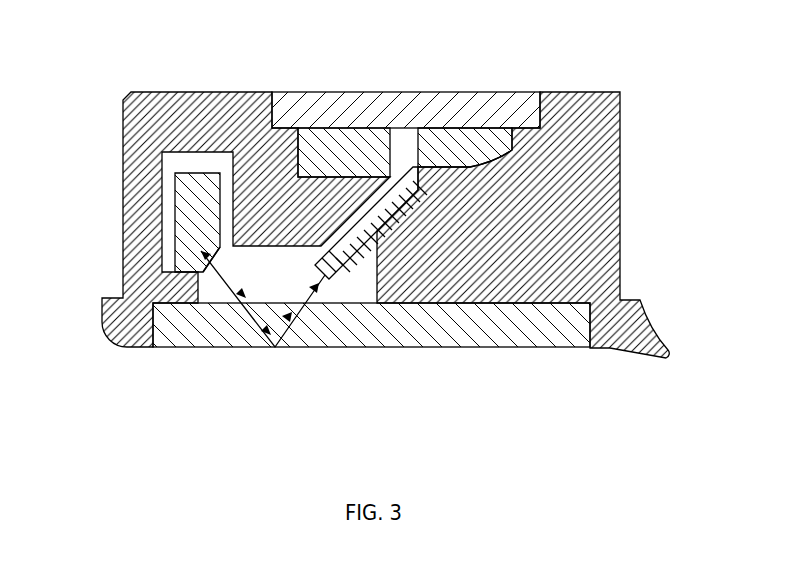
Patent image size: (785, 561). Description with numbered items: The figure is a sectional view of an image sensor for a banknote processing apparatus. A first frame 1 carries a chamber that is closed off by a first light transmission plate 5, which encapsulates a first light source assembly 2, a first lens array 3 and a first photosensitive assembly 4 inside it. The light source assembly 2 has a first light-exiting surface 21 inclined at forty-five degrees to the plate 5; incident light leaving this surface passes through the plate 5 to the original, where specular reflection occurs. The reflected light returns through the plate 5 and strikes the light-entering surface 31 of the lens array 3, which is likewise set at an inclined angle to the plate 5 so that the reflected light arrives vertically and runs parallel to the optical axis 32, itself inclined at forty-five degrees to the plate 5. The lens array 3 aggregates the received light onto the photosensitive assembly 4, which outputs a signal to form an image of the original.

The first frame 1 is at (135, 120).
The first light source assembly 2 is at (176, 222).
The first light-exiting surface 21 is at (200, 265).
The first lens array 3 is at (389, 300).
The light-entering surface 31 is at (327, 283).
The optical axis 32 is at (358, 243).
The first photosensitive assembly 4 is at (460, 142).
The first light transmission plate 5 is at (527, 347).